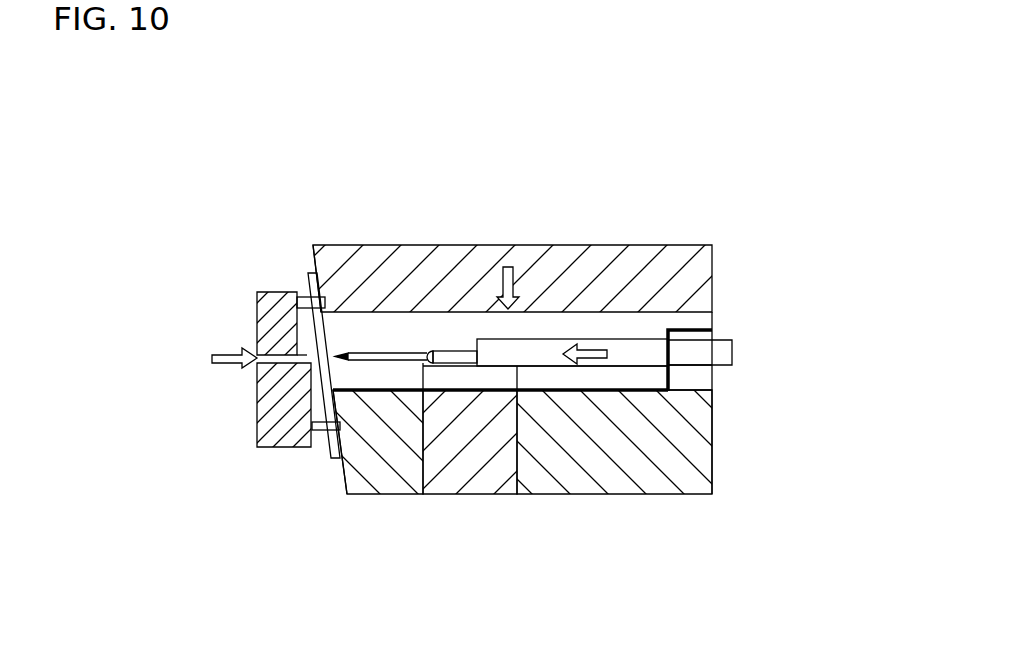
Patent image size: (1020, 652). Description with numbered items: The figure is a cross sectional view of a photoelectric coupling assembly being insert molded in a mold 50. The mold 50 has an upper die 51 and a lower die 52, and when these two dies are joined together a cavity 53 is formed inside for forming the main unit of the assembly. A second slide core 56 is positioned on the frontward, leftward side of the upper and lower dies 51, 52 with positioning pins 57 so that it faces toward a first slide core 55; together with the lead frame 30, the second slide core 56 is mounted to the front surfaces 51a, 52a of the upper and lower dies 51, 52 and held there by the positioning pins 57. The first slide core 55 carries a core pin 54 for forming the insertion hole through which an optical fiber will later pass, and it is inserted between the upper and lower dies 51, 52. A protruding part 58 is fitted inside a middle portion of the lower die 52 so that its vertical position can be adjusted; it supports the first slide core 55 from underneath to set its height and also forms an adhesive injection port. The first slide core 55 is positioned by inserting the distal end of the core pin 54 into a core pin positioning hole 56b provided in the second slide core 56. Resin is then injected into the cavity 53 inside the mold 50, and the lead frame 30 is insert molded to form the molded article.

The lead frame 30 is at (329, 457).
The mold 50 is at (480, 198).
The upper die 51 is at (556, 242).
The front surface of upper die 51a is at (312, 255).
The lower die 52 is at (623, 499).
The front surface of lower die 52a is at (340, 475).
The cavity 53 is at (558, 377).
The core pin 54 is at (382, 355).
The first slide core 55 is at (643, 336).
The second slide core 56 is at (275, 423).
The core pin positioning hole 56b is at (278, 358).
The positioning pin 57 is at (302, 297).
The protruding part 58 is at (473, 480).